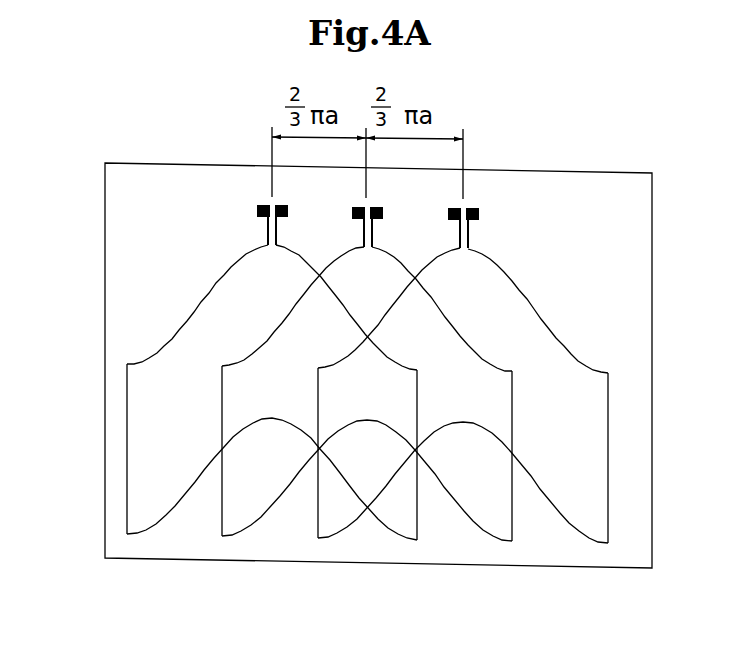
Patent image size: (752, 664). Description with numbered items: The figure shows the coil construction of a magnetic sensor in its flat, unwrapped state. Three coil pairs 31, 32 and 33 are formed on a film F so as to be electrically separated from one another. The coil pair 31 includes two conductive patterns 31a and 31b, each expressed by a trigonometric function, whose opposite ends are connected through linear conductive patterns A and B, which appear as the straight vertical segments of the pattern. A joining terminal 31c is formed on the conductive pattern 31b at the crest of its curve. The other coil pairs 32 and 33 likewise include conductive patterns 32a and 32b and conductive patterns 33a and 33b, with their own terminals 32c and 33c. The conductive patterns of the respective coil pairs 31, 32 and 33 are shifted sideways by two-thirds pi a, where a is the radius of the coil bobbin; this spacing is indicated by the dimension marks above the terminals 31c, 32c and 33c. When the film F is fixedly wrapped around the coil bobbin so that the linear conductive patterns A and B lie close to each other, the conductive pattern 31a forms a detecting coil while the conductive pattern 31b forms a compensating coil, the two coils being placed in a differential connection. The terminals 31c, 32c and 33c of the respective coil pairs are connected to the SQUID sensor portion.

The coil pair 31 is at (226, 392).
The coil pair 32 is at (339, 398).
The coil pair 33 is at (463, 398).
The conductive pattern 31a is at (155, 527).
The conductive pattern 32a is at (262, 523).
The conductive pattern 33a is at (352, 525).
The conductive pattern 31b is at (173, 328).
The conductive pattern 32b is at (277, 325).
The conductive pattern 33b is at (385, 315).
The joining terminal 31c is at (269, 200).
The joining terminal 32c is at (368, 202).
The joining terminal 33c is at (467, 202).
The linear conductive pattern A is at (122, 542).
The linear conductive pattern B is at (415, 549).
The film F is at (652, 330).